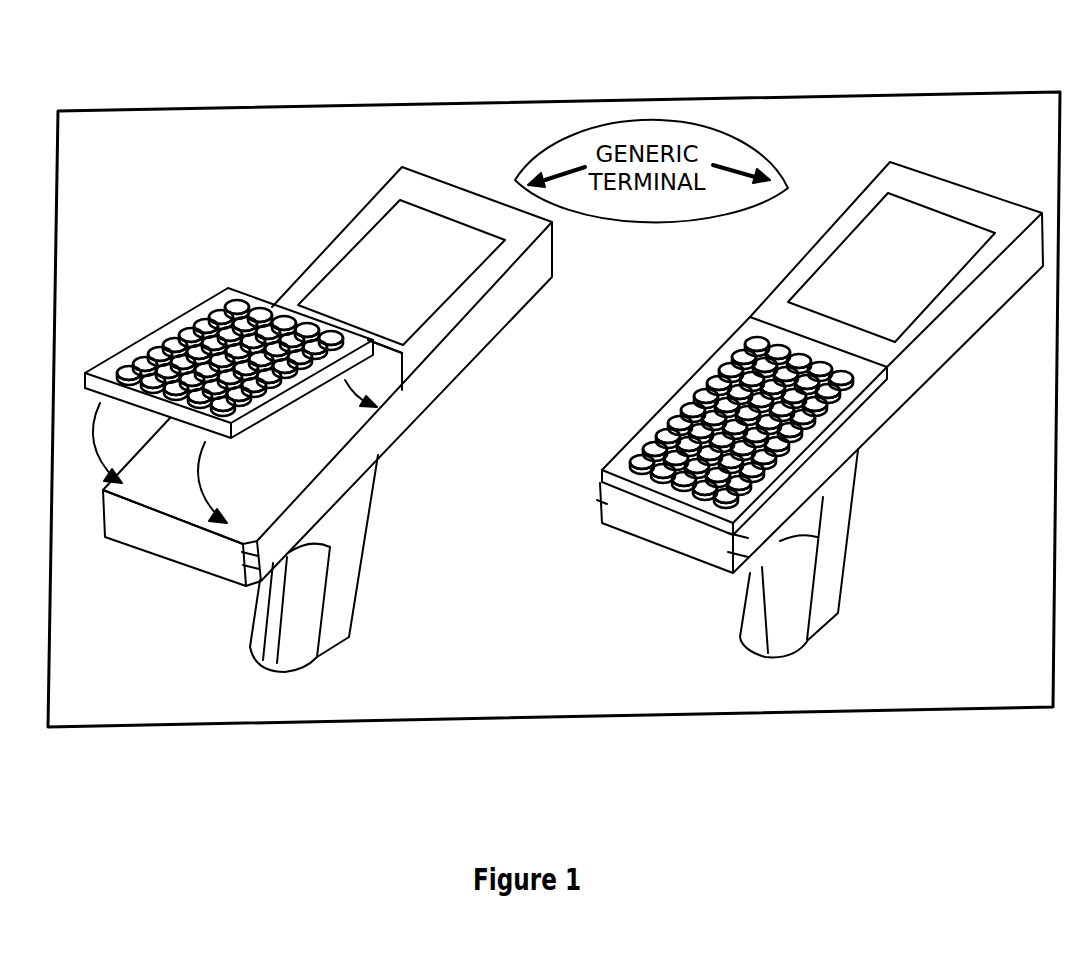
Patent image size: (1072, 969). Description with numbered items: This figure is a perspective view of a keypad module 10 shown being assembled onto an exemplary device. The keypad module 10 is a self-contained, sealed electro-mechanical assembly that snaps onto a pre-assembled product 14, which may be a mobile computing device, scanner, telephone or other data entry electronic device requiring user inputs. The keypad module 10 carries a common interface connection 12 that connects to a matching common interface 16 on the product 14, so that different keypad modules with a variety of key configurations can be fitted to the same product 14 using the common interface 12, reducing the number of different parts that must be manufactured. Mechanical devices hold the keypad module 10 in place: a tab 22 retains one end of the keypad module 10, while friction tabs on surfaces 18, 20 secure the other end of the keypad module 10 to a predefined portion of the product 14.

The keypad module 10 is at (238, 288).
The common interface connection 12 is at (283, 298).
The product 14 is at (442, 252).
The common interface 16 is at (385, 375).
The surface 18 is at (118, 400).
The surface 20 is at (172, 505).
The tab 22 is at (353, 317).